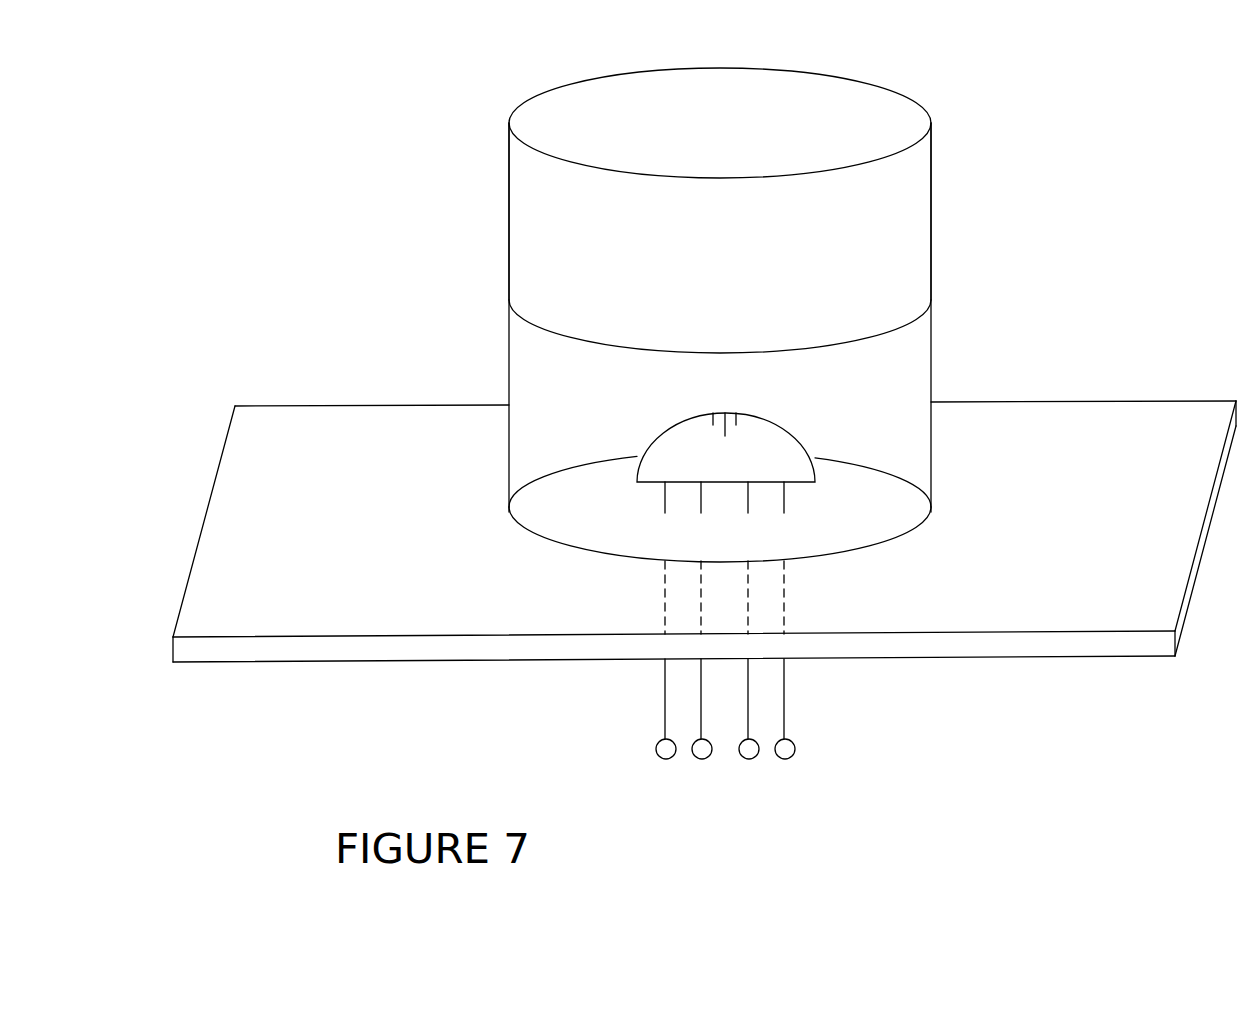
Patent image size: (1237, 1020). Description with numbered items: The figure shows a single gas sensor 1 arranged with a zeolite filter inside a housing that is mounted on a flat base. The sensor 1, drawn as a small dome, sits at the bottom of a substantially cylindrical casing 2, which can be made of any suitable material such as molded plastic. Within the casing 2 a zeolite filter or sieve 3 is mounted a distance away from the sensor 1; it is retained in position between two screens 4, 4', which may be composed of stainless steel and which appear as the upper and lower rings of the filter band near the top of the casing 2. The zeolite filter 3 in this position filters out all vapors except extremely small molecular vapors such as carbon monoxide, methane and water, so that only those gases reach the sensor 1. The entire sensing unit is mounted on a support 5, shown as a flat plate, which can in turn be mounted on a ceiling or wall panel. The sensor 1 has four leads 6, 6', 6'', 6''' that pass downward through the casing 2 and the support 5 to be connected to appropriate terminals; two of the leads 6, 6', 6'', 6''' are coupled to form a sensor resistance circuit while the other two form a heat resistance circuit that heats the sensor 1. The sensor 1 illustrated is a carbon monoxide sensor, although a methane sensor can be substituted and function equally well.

The gas sensor 1 is at (773, 454).
The casing 2 is at (943, 358).
The zeolite filter or sieve 3 is at (546, 86).
The screen 4 is at (720, 358).
The screen 4' is at (720, 100).
The support 5 is at (1084, 553).
The lead 6 is at (645, 650).
The lead 6' is at (705, 650).
The lead 6'' is at (756, 650).
The lead 6''' is at (809, 650).